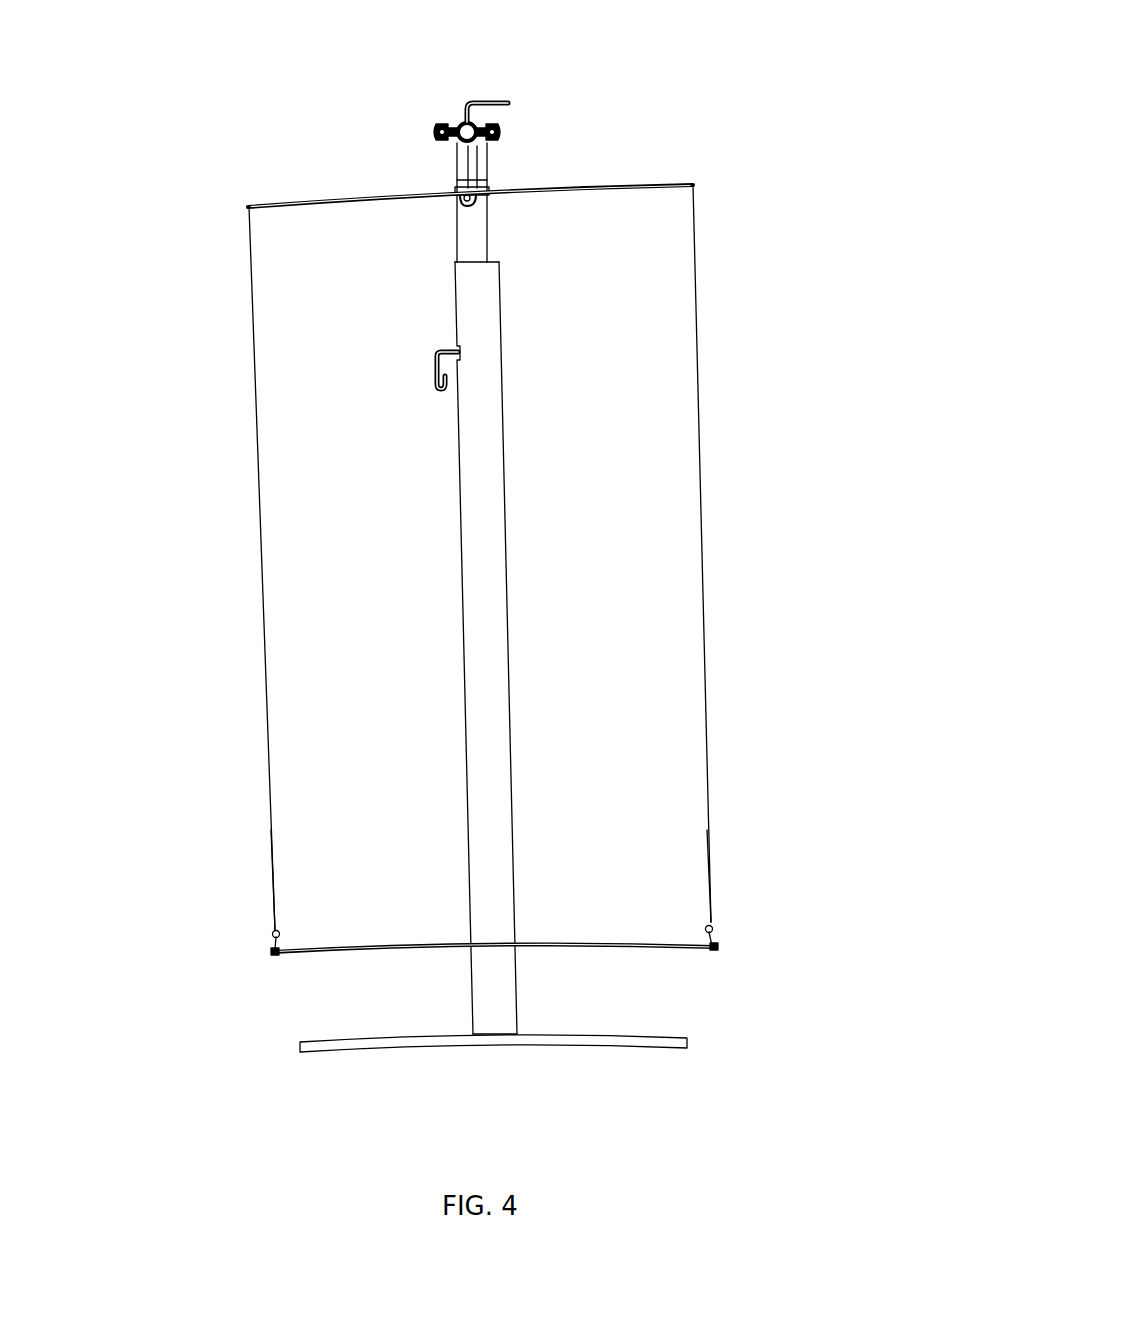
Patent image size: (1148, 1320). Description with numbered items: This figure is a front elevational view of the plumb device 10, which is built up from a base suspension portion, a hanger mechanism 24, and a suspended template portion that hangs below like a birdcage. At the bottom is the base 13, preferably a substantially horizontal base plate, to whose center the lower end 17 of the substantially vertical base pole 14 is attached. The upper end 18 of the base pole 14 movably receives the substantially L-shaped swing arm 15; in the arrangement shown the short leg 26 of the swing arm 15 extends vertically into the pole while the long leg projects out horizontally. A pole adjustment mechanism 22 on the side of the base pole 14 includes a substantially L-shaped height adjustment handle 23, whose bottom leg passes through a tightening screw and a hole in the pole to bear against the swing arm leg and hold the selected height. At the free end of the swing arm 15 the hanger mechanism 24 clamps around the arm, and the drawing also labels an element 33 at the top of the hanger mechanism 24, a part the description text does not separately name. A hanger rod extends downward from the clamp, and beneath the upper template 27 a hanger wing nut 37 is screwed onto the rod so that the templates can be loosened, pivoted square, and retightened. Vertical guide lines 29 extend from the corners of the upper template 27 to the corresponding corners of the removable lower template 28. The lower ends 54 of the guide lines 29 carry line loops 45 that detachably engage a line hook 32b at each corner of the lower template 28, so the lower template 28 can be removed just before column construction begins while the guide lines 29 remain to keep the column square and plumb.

The plumb device 10 is at (741, 95).
The base 13 is at (687, 1042).
The base pole 14 is at (485, 486).
The swing arm 15 is at (498, 182).
The lower end of the base pole 17 is at (520, 1036).
The upper end of the base pole 18 is at (498, 262).
The pole adjustment mechanism 22 is at (228, 362).
The height adjustment handle 23 is at (433, 372).
The hanger mechanism 24 is at (446, 109).
The short leg 26 is at (487, 238).
The upper template 27 is at (696, 186).
The lower template 28 is at (722, 947).
The guide lines 29 is at (705, 428).
The line hook 32b is at (272, 950).
The handle 33 is at (506, 101).
The hanger wing nut 37 is at (444, 193).
The line loops 45 is at (275, 931).
The lower end of the guide line 54 is at (276, 918).